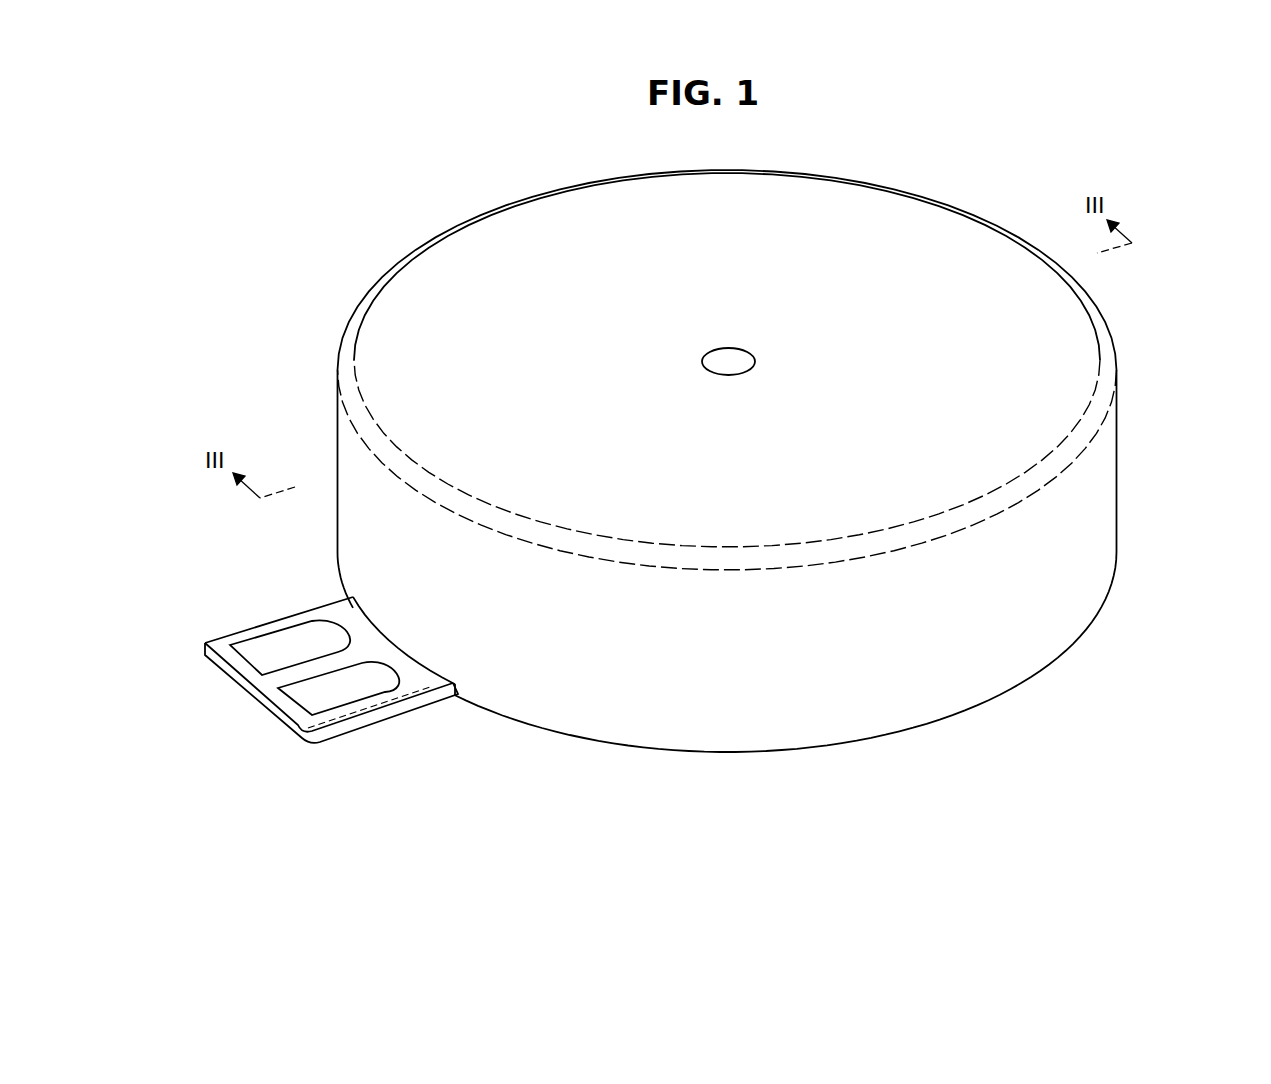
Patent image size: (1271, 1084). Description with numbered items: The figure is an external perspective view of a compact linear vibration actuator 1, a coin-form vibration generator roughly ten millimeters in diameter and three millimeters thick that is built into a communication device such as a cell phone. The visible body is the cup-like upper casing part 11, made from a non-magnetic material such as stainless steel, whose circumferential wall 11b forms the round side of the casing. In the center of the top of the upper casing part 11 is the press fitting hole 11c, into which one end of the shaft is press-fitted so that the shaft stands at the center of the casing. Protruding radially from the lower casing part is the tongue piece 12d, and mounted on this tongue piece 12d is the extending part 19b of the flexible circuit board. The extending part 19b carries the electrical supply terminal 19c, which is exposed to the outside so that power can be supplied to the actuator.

The linear vibration actuator 1 is at (318, 164).
The upper casing part 11 is at (1100, 306).
The circumferential wall 11b is at (1118, 460).
The press fitting hole 11c is at (745, 347).
The tongue piece 12d is at (376, 722).
The extending part 19b is at (347, 613).
The electrical supply terminal 19c is at (325, 693).